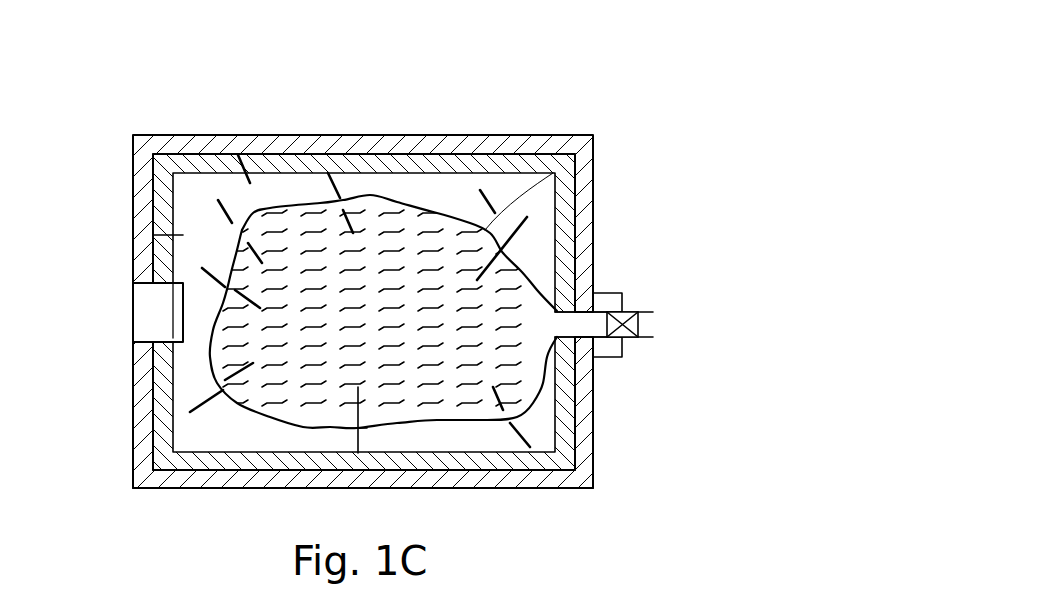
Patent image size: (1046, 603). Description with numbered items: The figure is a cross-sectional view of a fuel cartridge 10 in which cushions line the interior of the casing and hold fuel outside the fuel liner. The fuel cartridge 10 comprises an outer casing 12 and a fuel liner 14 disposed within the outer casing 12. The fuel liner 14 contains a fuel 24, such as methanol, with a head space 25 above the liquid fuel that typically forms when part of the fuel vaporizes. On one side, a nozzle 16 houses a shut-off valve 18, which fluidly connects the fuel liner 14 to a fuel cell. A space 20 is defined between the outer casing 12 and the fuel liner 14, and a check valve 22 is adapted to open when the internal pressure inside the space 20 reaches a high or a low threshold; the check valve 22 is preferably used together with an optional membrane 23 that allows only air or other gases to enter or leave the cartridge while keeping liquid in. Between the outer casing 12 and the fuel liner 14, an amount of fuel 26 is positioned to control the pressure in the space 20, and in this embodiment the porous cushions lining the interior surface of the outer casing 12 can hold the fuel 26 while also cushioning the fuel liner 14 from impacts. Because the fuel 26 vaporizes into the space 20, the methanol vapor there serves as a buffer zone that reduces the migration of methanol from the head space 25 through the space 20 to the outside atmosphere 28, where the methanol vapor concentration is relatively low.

The fuel cartridge 10 is at (572, 97).
The outer casing 12 is at (328, 142).
The fuel liner 14 is at (397, 202).
The nozzle 16 is at (608, 292).
The shut-off valve 18 is at (630, 337).
The space 20 is at (195, 203).
The check valve 22 is at (148, 312).
The membrane 23 is at (178, 333).
The fuel 24 is at (522, 392).
The head space 25 is at (572, 162).
The fuel 26 is at (593, 488).
The atmosphere 28 is at (107, 103).